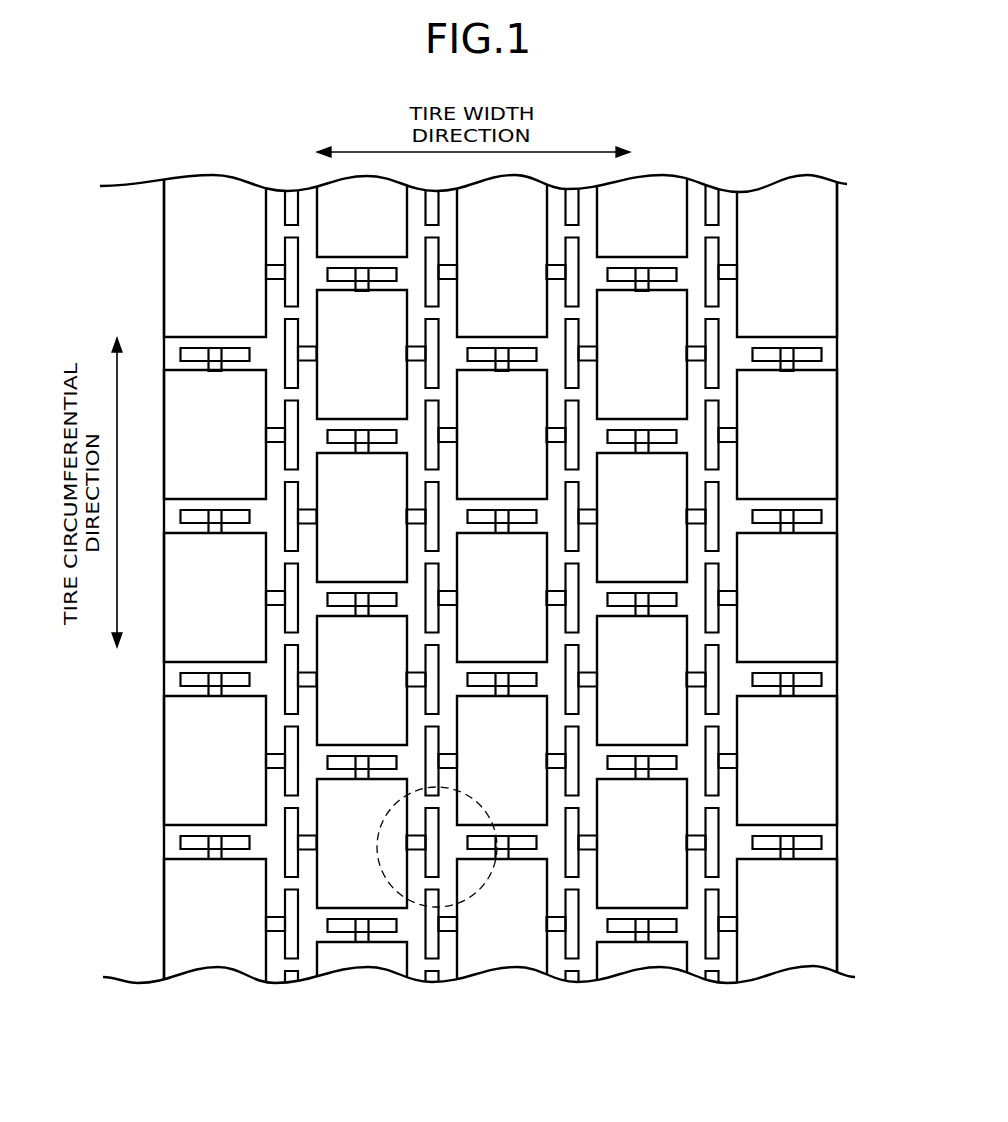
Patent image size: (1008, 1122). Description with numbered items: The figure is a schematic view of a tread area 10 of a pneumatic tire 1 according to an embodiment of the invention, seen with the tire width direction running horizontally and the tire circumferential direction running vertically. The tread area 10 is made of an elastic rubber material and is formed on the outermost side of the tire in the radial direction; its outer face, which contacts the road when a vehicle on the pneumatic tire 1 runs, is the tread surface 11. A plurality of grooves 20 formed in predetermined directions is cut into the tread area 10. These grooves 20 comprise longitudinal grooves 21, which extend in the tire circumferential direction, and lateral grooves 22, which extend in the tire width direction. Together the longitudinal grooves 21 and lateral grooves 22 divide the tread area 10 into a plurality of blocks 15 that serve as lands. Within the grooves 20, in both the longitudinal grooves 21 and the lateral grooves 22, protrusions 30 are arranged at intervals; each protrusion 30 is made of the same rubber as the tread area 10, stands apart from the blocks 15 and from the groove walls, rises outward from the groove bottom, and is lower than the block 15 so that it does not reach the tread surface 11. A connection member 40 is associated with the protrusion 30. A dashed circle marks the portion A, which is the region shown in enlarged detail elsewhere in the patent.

The pneumatic tire 1 is at (734, 168).
The tread area 10 is at (837, 743).
The tread surface 11 is at (668, 350).
The block 15 is at (687, 390).
The groove 20 is at (792, 598).
The longitudinal groove 21 is at (695, 927).
The lateral groove 22 is at (823, 673).
The protrusion 30 is at (290, 782).
The connection member 40 is at (282, 755).
The portion A is at (470, 902).